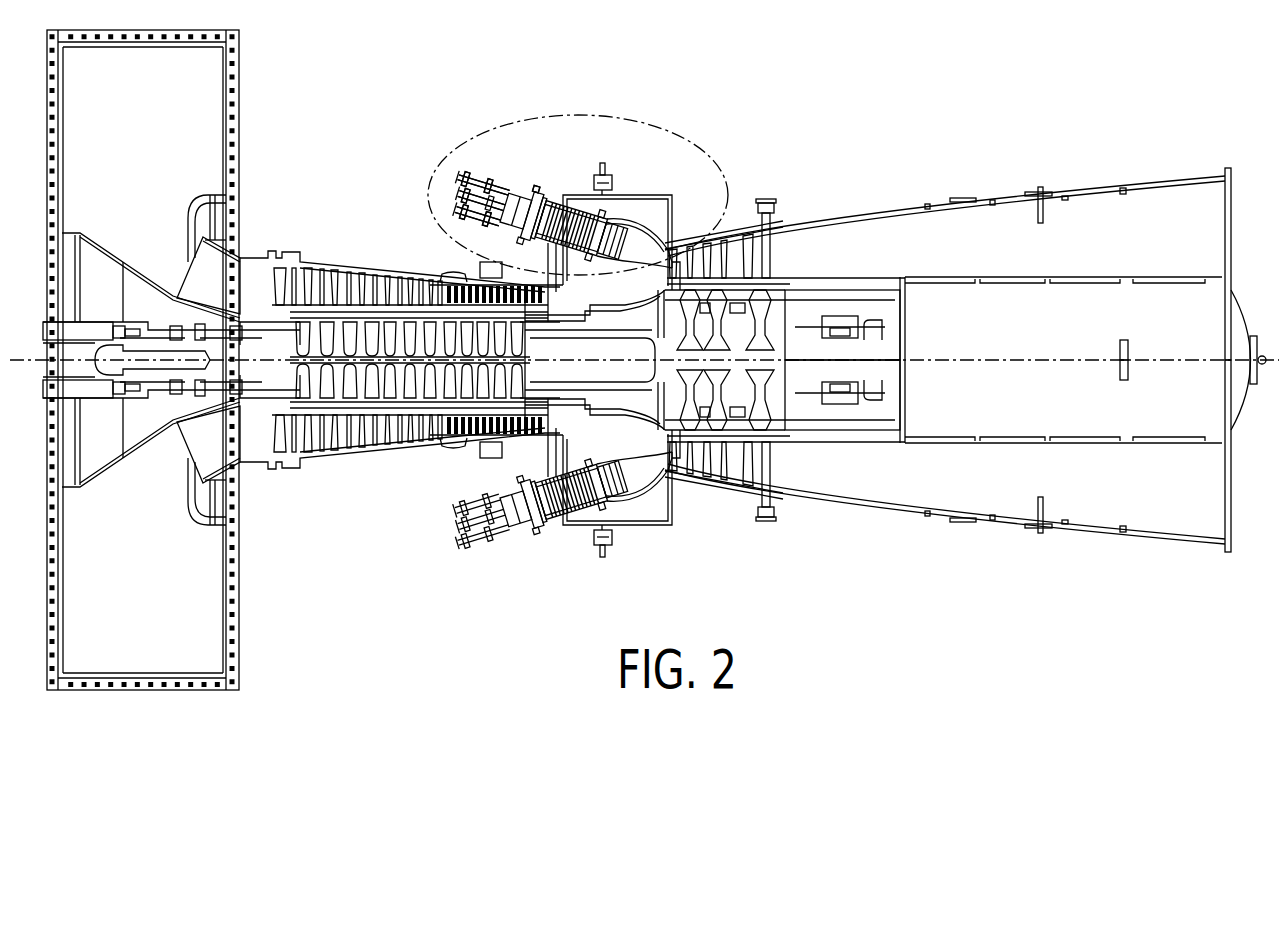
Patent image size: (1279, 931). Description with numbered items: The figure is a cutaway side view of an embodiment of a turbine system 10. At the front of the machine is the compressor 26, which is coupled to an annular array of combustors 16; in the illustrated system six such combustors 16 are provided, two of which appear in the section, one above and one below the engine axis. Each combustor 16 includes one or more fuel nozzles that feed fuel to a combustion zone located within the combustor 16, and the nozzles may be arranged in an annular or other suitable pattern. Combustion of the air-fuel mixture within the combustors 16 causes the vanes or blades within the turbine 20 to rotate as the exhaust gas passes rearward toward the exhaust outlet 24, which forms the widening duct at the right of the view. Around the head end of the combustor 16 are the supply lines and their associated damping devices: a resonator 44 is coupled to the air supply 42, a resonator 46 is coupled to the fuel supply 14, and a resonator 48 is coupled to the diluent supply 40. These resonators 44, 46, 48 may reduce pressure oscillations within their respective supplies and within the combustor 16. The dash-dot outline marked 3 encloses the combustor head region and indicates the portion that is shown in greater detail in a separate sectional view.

The turbine system 10 is at (729, 552).
The fuel supply 14 is at (455, 199).
The combustor 16 is at (568, 172).
The turbine 20 is at (707, 266).
The exhaust outlet 24 is at (978, 235).
The compressor 26 is at (327, 282).
The section line for FIG. 3 is at (590, 128).
The diluent supply 40 is at (455, 180).
The air supply 42 is at (641, 208).
The resonator 44 is at (620, 180).
The resonator 46 is at (460, 218).
The resonator 48 is at (486, 172).